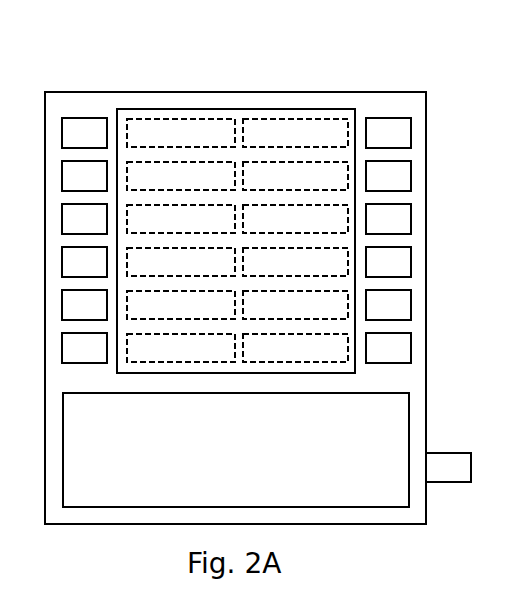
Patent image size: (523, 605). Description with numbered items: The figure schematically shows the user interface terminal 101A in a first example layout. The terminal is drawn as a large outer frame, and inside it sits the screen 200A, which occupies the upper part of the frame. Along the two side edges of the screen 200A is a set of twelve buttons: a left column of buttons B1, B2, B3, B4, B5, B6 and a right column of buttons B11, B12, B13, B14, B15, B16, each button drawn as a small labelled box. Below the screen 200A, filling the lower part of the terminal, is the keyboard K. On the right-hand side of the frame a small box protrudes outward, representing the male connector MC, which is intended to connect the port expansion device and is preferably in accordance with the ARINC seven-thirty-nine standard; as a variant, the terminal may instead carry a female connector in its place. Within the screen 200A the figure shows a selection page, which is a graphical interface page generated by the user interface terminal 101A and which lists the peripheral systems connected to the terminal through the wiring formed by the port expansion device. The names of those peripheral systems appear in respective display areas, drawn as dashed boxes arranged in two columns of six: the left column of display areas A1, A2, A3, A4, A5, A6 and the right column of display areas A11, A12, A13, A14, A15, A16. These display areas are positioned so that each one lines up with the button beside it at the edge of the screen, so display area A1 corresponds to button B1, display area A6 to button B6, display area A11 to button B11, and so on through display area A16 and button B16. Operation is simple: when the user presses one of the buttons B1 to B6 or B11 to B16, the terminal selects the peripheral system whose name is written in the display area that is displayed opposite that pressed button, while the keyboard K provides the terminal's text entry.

The user interface terminal 101A is at (339, 92).
The screen 200A is at (228, 108).
The keyboard K is at (236, 450).
The male connector MC is at (448, 467).
The display area A1 is at (181, 133).
The display area A2 is at (181, 176).
The display area A3 is at (181, 219).
The display area A4 is at (181, 262).
The display area A5 is at (181, 305).
The display area A6 is at (181, 348).
The display area A11 is at (295, 133).
The display area A12 is at (295, 176).
The display area A13 is at (295, 219).
The display area A14 is at (295, 262).
The display area A15 is at (295, 305).
The display area A16 is at (295, 348).
The button B1 is at (84, 133).
The button B2 is at (84, 176).
The button B3 is at (84, 219).
The button B4 is at (84, 262).
The button B5 is at (84, 305).
The button B6 is at (84, 348).
The button B11 is at (388, 133).
The button B12 is at (388, 176).
The button B13 is at (388, 219).
The button B14 is at (388, 262).
The button B15 is at (388, 305).
The button B16 is at (388, 348).